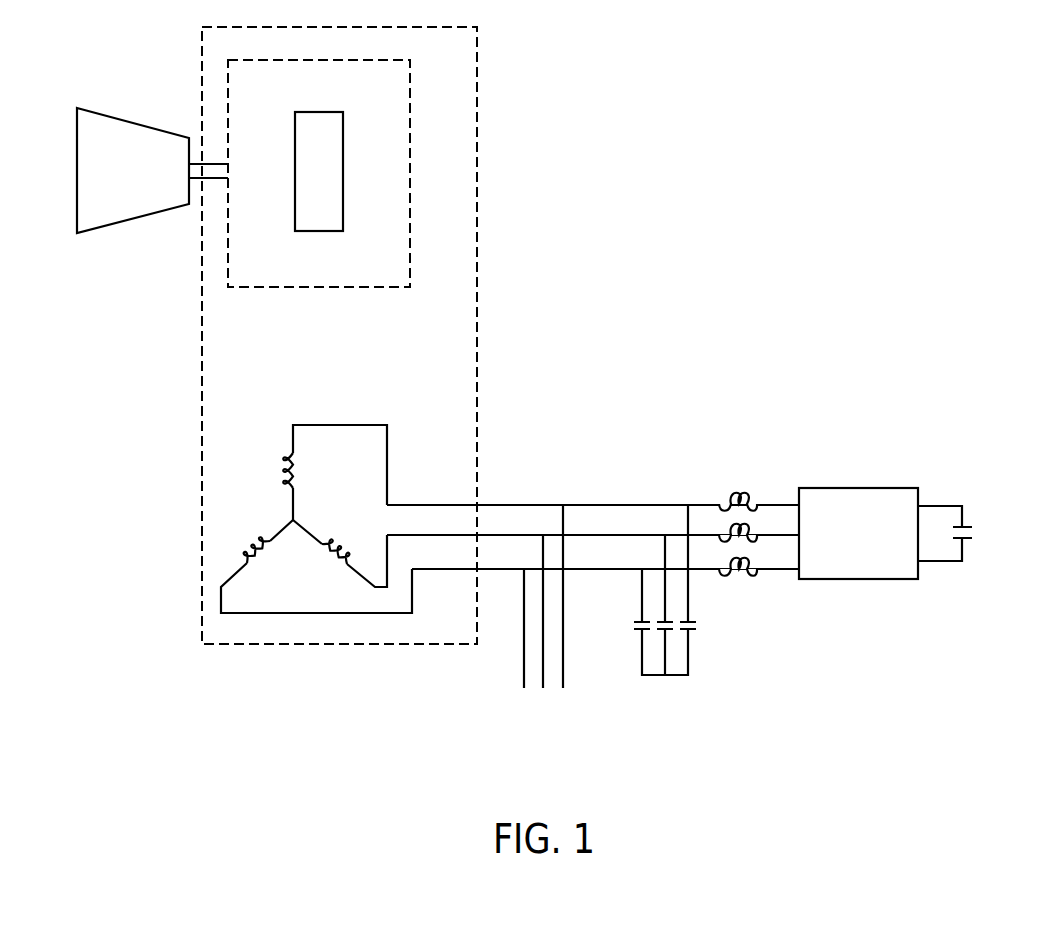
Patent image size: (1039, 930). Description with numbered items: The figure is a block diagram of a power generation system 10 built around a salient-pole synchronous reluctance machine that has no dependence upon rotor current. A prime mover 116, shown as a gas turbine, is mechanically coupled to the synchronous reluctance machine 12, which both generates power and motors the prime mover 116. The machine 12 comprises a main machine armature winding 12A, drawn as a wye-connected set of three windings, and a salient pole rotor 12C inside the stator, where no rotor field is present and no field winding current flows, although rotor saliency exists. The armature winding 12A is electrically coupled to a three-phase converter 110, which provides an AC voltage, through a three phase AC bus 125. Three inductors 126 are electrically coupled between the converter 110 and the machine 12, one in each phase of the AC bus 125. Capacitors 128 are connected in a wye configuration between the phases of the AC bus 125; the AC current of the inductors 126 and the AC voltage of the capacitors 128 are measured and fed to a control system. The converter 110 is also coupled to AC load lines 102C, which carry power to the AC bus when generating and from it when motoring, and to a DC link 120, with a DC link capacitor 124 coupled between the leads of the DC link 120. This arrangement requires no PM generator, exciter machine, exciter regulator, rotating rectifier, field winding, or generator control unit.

The system 10 is at (753, 269).
The synchronous reluctance machine 12 is at (506, 271).
The armature winding 12A is at (255, 513).
The salient pole rotor 12C is at (281, 159).
The prime mover 116 is at (132, 120).
The three phase AC bus 125 is at (429, 504).
The inductors 126 is at (743, 498).
The 3-phase converter 110 is at (859, 485).
The DC link 120 is at (939, 504).
The DC link capacitor 124 is at (983, 528).
The AC load lines 102C is at (563, 612).
The capacitors 128 is at (698, 627).